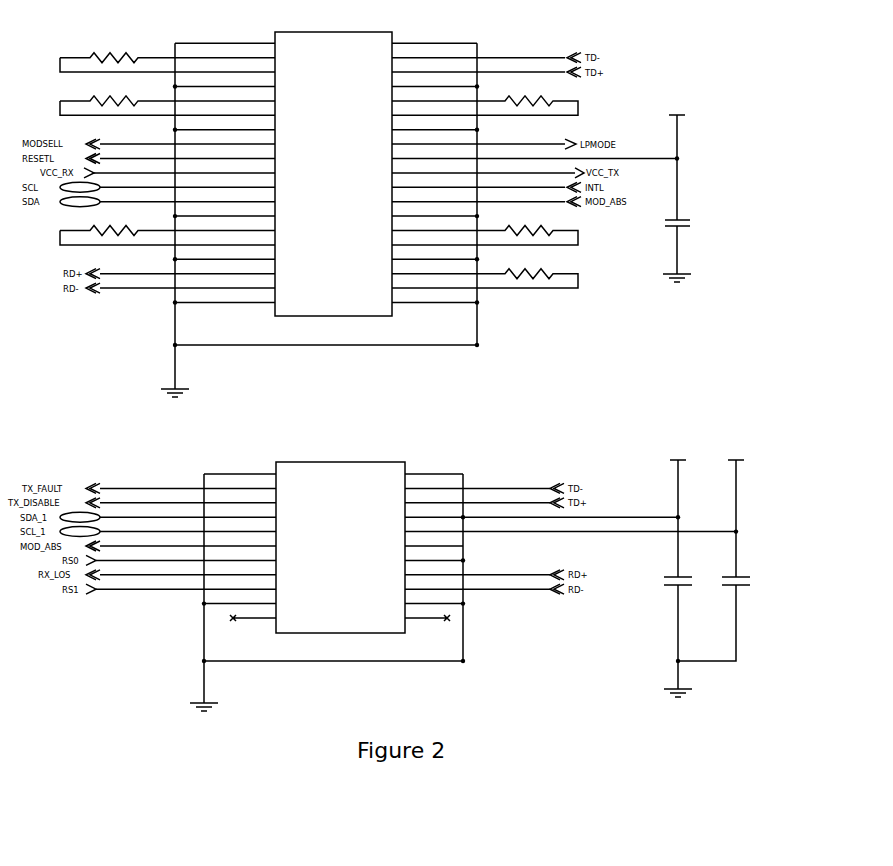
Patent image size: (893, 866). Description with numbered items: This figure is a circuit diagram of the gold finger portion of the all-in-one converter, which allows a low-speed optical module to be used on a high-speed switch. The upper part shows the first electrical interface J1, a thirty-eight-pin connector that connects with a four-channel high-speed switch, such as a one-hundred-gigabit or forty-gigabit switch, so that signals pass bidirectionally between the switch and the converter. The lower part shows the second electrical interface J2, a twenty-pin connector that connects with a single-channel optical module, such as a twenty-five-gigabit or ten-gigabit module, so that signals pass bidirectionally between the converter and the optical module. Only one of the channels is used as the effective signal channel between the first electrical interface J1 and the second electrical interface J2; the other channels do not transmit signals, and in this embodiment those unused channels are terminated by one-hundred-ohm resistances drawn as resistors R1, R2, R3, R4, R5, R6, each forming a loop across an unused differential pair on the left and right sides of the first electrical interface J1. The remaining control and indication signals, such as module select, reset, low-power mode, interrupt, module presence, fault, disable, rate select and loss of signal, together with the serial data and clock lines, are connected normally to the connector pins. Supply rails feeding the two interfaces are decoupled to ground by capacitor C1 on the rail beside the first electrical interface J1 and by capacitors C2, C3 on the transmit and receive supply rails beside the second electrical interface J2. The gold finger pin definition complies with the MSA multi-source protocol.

The first electrical interface J1 is at (333, 173).
The second electrical interface J2 is at (340, 548).
The 100K resistor R1 is at (117, 59).
The 100K resistor R2 is at (117, 102).
The 100K resistor R3 is at (527, 102).
The 100K resistor R4 is at (117, 232).
The 100K resistor R5 is at (527, 232).
The 100K resistor R6 is at (527, 275).
The 10uF capacitor C1 is at (689, 191).
The 10uF capacitor C2 is at (663, 571).
The 10uF capacitor C3 is at (730, 553).